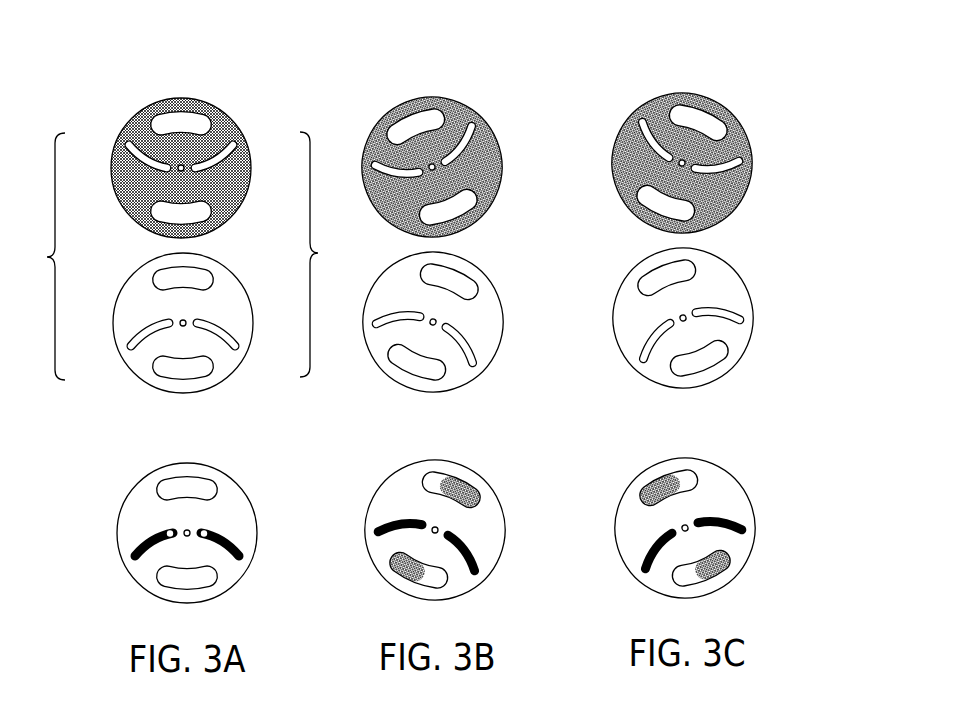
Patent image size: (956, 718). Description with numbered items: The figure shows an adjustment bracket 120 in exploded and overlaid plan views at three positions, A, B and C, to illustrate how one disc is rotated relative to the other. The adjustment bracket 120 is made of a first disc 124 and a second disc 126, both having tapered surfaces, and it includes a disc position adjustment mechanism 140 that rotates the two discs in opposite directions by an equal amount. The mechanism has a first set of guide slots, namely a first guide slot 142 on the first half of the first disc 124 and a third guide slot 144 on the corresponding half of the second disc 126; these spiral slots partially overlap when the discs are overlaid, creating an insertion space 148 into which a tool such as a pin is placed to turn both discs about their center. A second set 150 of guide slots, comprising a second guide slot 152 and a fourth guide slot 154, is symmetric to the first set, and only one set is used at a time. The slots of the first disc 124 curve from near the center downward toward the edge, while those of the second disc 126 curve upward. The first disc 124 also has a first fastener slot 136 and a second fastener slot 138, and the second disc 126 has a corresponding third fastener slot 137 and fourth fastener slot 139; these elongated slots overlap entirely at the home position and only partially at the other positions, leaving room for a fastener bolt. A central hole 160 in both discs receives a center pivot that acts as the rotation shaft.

In FIG. 3A, the adjustment bracket 120 is at (108, 68).
In FIG. 3B, the adjustment bracket 120 is at (358, 68).
In FIG. 3C, the adjustment bracket 120 is at (610, 68).
In FIG. 3A, the first disc 124 is at (183, 428).
In FIG. 3B, the first disc 124 is at (419, 426).
In FIG. 3C, the first disc 124 is at (677, 423).
In FIG. 3A, the second disc 126 is at (181, 344).
In FIG. 3B, the second disc 126 is at (372, 132).
In FIG. 3C, the second disc 126 is at (674, 163).
In FIG. 3C, the first fastener slot 136 is at (702, 362).
In FIG. 3C, the third fastener slot 137 is at (649, 199).
In FIG. 3C, the second fastener slot 138 is at (643, 282).
In FIG. 3C, the fourth fastener slot 139 is at (703, 120).
In FIG. 3A, the disc position adjustment mechanism 140 is at (36, 256).
In FIG. 3A, the first guide slot 142 is at (130, 347).
In FIG. 3A, the third guide slot 144 is at (130, 148).
In FIG. 3A, the insertion space 148 is at (160, 530).
In FIG. 3B, the insertion space 148 is at (378, 529).
In FIG. 3C, the insertion space 148 is at (645, 558).
In FIG. 3A, the second set of guide slots 150 is at (329, 254).
In FIG. 3A, the second guide slot 152 is at (236, 346).
In FIG. 3A, the fourth guide slot 154 is at (234, 148).
In FIG. 3A, the central hole 160 is at (189, 528).